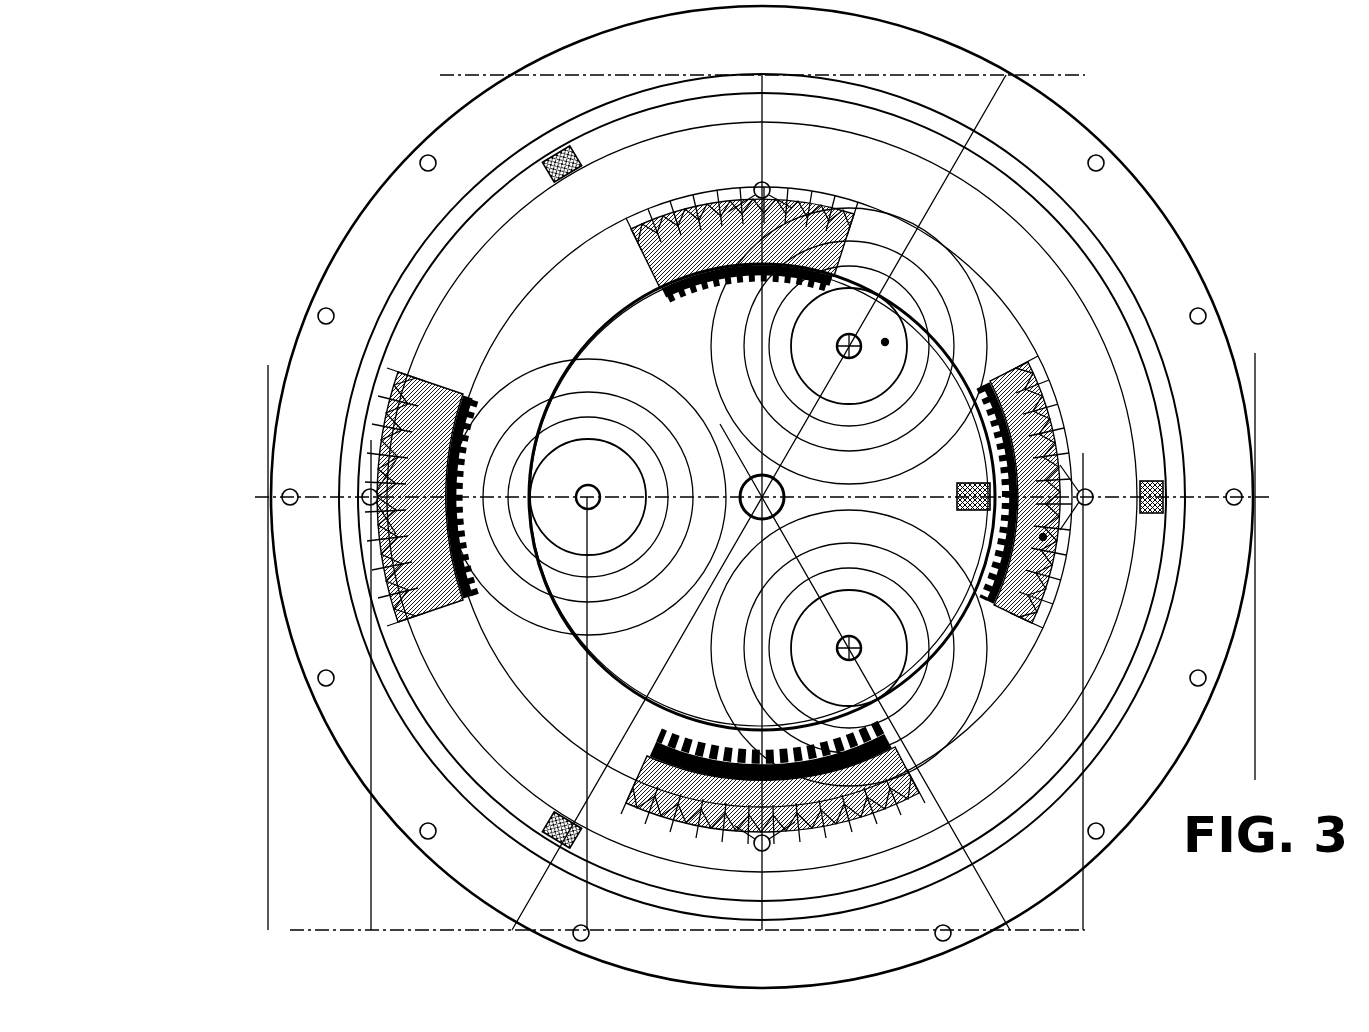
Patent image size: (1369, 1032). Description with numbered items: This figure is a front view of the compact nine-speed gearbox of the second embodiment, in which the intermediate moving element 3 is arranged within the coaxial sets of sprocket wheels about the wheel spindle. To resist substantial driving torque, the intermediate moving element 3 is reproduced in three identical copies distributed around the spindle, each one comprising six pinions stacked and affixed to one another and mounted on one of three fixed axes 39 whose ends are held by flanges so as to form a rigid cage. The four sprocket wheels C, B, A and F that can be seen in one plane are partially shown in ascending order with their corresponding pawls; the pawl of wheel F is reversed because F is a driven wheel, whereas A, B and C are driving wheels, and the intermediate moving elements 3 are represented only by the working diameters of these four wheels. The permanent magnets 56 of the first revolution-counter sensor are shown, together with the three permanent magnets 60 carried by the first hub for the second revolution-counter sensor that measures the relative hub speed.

The intermediate moving element 3 is at (1215, 258).
The fixed axes 39 is at (836, 350).
The permanent magnets 56 is at (968, 521).
The permanent magnets 60 is at (552, 158).
The sprocket wheel A is at (673, 815).
The sprocket wheel B is at (1043, 537).
The sprocket wheel C is at (627, 233).
The sprocket wheel F is at (391, 457).